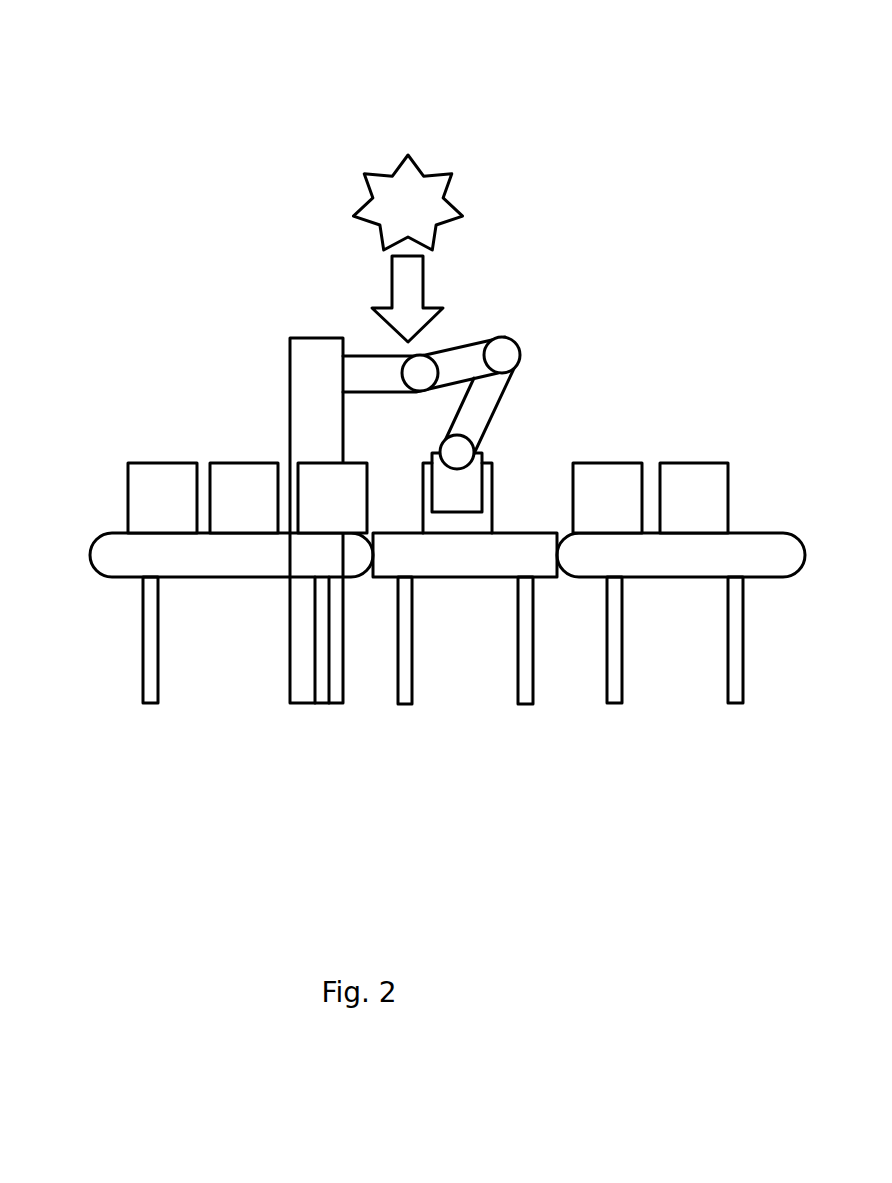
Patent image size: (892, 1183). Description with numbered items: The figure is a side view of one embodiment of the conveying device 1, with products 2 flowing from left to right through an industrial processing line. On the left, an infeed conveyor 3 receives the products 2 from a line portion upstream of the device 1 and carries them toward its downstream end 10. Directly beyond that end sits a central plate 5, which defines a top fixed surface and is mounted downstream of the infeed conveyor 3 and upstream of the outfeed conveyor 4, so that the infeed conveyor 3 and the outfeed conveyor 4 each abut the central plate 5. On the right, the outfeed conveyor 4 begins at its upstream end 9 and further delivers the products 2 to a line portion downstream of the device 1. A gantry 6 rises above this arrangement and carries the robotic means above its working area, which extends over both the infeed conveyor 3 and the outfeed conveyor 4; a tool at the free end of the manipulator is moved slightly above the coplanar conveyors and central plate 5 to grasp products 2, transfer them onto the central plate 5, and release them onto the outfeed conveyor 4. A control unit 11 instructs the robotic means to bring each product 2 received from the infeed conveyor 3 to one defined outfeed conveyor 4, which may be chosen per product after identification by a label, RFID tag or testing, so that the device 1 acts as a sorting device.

The conveying device 1 is at (246, 269).
The products 2 is at (152, 519).
The infeed conveyor 3 is at (228, 566).
The outfeed conveyor 4 is at (700, 564).
The central plate 5 is at (468, 566).
The gantry 6 is at (529, 374).
The upstream end 9 is at (587, 596).
The downstream end 10 is at (353, 567).
The control unit 11 is at (418, 188).